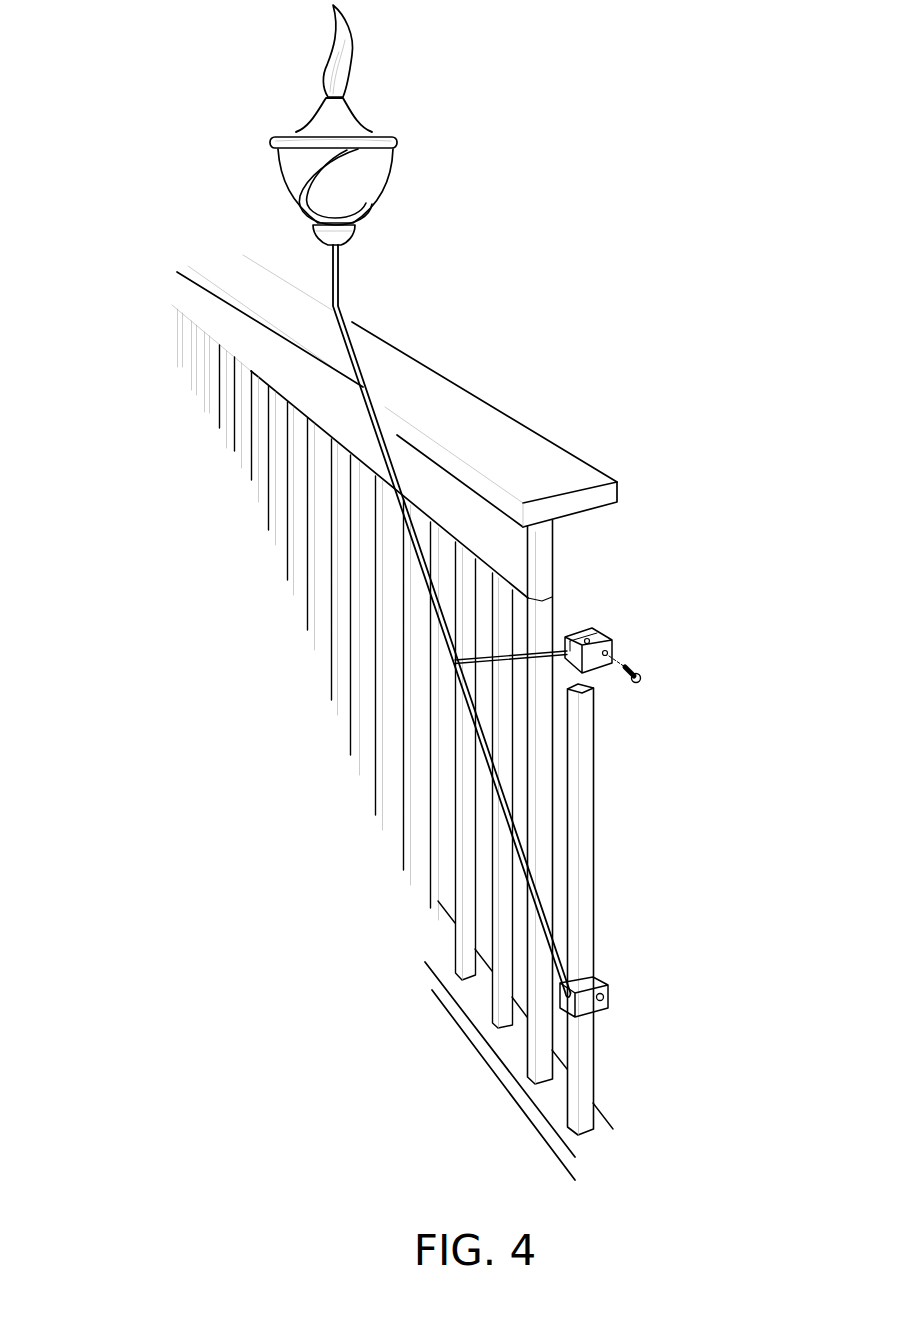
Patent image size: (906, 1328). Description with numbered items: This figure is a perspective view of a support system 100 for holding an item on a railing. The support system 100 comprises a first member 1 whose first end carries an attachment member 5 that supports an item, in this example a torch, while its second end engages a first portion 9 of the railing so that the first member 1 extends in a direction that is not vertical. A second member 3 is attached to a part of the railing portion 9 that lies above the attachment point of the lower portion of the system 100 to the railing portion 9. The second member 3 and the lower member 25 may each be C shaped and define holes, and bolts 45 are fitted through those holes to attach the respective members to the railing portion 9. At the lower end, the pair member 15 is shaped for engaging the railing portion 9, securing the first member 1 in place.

The support system 100 is at (216, 122).
The first member 1 is at (490, 343).
The attachment member 5 is at (357, 233).
The second member 3 is at (618, 612).
The bolts 45 is at (648, 682).
The member 25 is at (610, 982).
The pair member 15 is at (608, 997).
The first portion of railing 9 is at (617, 1029).